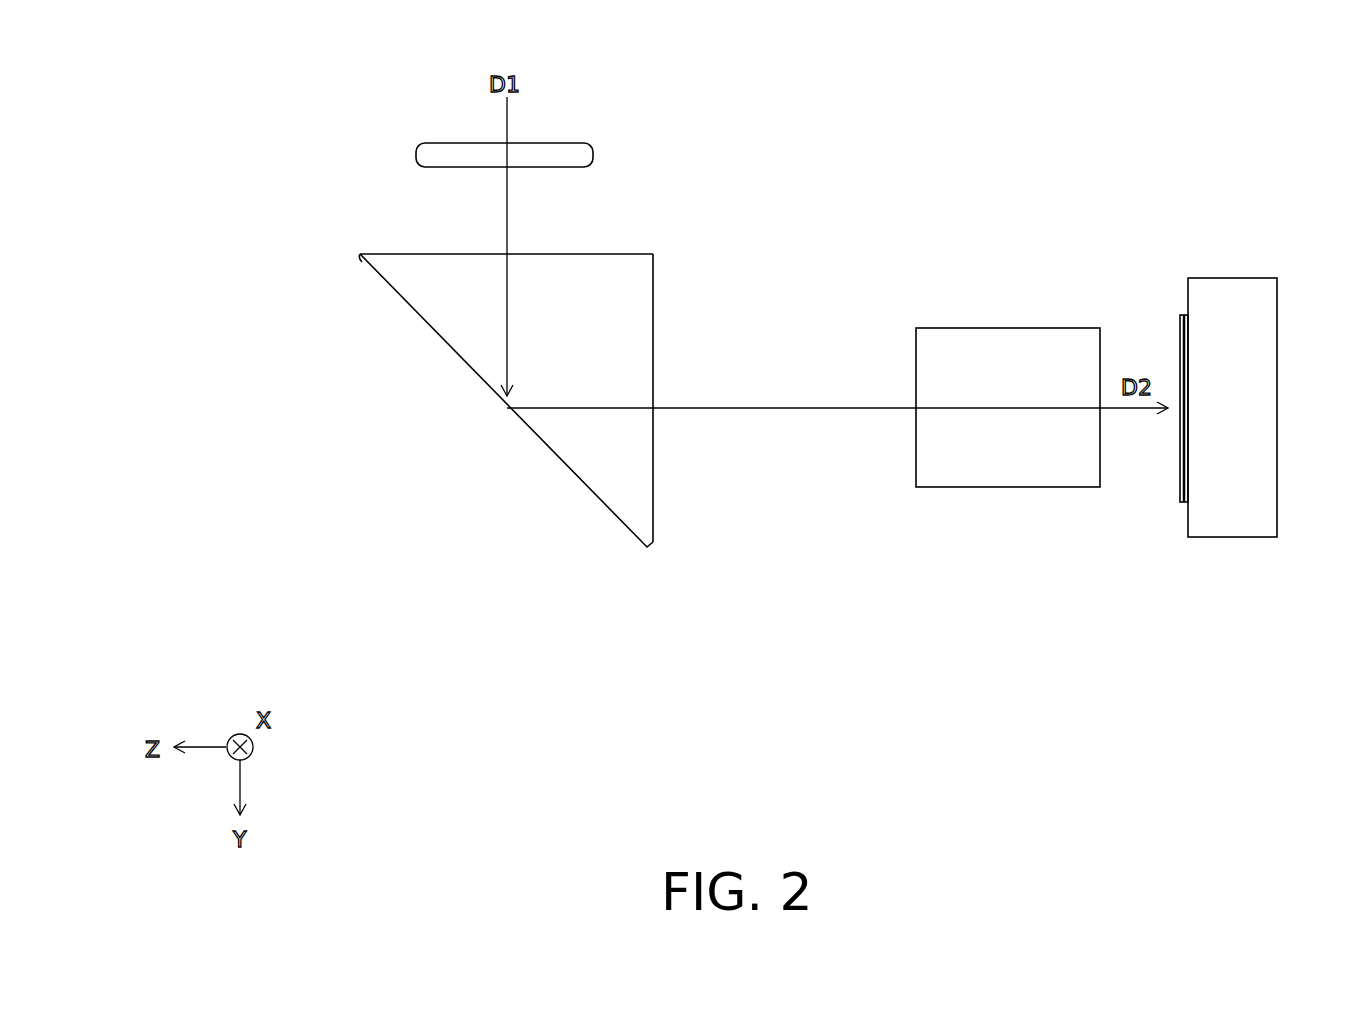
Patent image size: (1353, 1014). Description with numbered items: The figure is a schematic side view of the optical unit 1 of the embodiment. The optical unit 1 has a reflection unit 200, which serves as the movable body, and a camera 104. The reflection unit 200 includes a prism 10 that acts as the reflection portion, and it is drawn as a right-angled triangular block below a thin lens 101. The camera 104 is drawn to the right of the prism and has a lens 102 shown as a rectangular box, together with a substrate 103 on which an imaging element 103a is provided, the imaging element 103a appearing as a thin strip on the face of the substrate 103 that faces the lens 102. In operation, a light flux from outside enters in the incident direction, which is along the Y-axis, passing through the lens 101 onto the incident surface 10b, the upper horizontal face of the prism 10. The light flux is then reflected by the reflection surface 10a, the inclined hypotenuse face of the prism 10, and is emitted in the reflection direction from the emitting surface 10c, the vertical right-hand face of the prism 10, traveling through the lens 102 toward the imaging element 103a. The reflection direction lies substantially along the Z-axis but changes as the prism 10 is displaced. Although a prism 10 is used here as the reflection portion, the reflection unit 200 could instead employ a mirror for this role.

The optical unit 1 is at (902, 134).
The prism 10 is at (537, 362).
The reflection surface 10a is at (386, 298).
The incident surface 10b is at (452, 253).
The emitting surface 10c is at (653, 287).
The lens 101 is at (587, 131).
The lens 102 is at (1069, 286).
The substrate 103 is at (1232, 397).
The imaging element 103a is at (1175, 481).
The camera 104 is at (1323, 163).
The reflection unit 200 is at (724, 270).